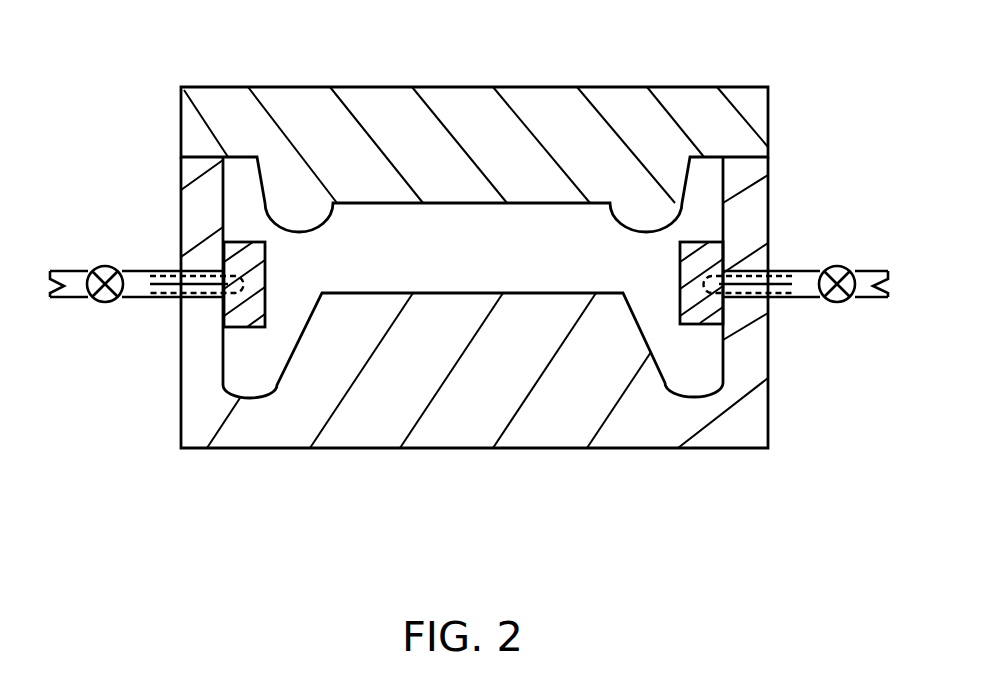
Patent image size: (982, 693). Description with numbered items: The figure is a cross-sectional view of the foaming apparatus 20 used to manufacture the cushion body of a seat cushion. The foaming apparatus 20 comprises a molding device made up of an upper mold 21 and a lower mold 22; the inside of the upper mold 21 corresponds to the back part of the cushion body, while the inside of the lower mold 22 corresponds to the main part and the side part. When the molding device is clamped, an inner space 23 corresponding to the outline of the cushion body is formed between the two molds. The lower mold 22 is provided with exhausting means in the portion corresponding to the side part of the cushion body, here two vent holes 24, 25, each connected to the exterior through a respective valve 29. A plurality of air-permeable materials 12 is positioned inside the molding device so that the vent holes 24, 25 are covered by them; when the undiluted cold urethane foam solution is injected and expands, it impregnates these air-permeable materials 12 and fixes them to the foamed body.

The air-permeable material 12 is at (245, 322).
The foaming apparatus 20 is at (472, 329).
The upper mold 21 is at (200, 126).
The lower mold 22 is at (435, 427).
The inner space 23 is at (483, 266).
The vent hole 24 is at (227, 298).
The vent hole 25 is at (700, 318).
The valve 29 is at (100, 266).